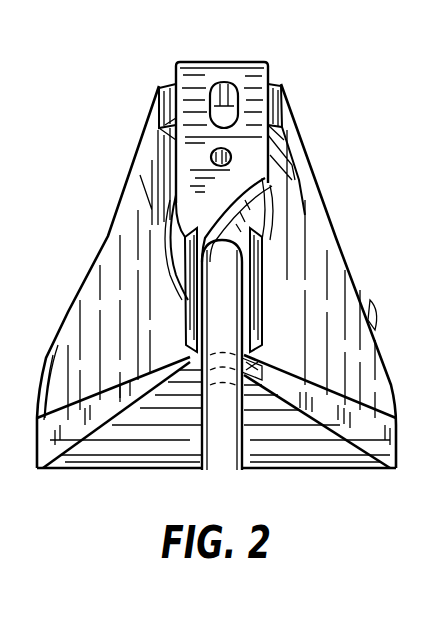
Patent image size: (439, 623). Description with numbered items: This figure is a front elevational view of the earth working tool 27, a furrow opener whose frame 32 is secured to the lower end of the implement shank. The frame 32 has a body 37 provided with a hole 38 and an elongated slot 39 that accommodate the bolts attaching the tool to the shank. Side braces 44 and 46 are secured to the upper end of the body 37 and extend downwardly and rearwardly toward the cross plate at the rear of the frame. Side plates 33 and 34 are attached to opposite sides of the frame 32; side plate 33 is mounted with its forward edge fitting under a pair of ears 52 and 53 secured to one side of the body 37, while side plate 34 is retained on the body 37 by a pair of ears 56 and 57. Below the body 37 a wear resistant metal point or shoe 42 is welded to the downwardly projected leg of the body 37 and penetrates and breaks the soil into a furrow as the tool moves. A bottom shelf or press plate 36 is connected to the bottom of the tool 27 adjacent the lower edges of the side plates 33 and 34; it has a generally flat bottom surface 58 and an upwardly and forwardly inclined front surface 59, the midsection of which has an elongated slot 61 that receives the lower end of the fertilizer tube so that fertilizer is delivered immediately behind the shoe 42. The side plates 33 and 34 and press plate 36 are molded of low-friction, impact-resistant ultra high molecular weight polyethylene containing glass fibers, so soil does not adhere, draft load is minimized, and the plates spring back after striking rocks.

The earth working tool 27 is at (326, 66).
The frame 32 is at (158, 103).
The side plate 33 is at (118, 245).
The side plate 34 is at (316, 248).
The press plate 36 is at (98, 458).
The body 37 is at (248, 74).
The hole 38 is at (213, 155).
The elongated slot 39 is at (222, 92).
The shoe 42 is at (218, 460).
The side brace 44 is at (288, 118).
The side brace 46 is at (158, 117).
The ear 52 is at (165, 169).
The ear 53 is at (192, 292).
The ear 56 is at (298, 143).
The ear 57 is at (263, 298).
The bottom surface 58 is at (324, 462).
The front surface 59 is at (312, 418).
The elongated slot 61 is at (265, 368).